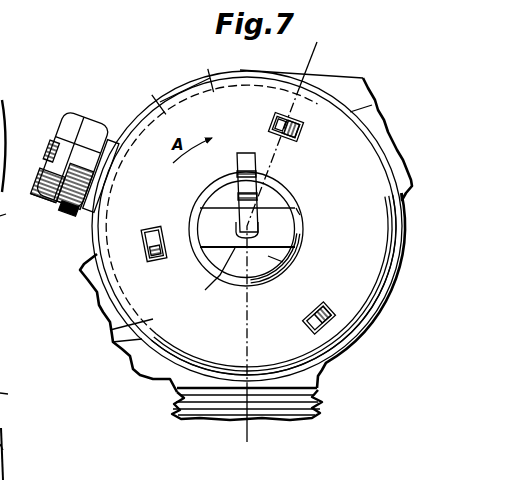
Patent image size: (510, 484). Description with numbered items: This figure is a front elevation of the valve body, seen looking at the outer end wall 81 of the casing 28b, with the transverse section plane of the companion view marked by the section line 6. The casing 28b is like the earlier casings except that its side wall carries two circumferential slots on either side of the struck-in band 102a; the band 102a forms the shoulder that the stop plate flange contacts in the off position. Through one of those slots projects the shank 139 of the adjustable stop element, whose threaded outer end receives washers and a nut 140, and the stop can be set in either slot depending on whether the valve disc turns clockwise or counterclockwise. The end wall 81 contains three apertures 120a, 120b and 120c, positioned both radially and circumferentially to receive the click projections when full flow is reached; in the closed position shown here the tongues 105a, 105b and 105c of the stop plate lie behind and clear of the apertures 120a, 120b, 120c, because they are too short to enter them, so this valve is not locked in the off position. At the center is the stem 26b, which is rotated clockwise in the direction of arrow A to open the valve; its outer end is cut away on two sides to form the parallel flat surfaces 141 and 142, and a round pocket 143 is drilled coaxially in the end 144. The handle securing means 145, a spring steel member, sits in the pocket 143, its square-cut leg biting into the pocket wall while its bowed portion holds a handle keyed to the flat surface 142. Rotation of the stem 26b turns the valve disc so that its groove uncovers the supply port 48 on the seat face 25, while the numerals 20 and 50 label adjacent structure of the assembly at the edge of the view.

The housing 20 is at (366, 81).
The shank 139 is at (50, 150).
The nut 140 is at (58, 183).
The adjacent part 50 is at (10, 220).
The supply port 48 is at (0, 393).
The valve member seat face 25 is at (0, 444).
The struck-in band 102a is at (184, 102).
The handle securing means 145 is at (250, 129).
The round pocket 143 is at (238, 229).
The flat surface 142 is at (238, 248).
The flat surface 141 is at (283, 205).
The end 144 is at (286, 229).
The stem 26b is at (270, 256).
The aperture 120a is at (301, 131).
The tongue 105a is at (293, 141).
The aperture 120c is at (153, 228).
The tongue 105c is at (161, 262).
The aperture 120b is at (306, 326).
The tongue 105b is at (314, 308).
The casing 28b is at (363, 293).
The end wall 81 is at (110, 330).
The section line 6 is at (346, 60).